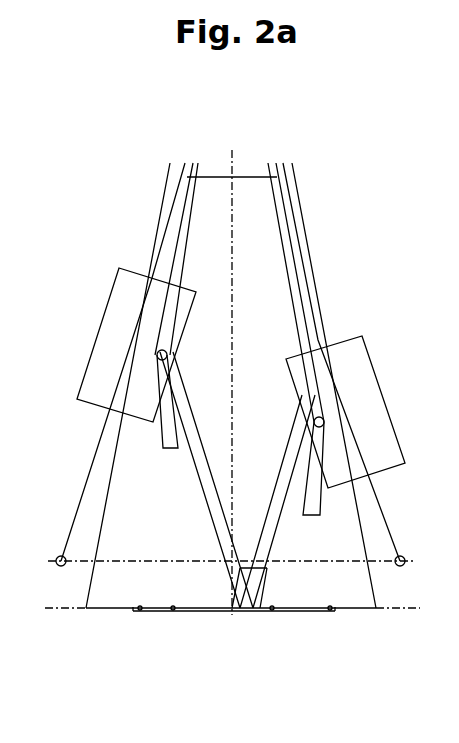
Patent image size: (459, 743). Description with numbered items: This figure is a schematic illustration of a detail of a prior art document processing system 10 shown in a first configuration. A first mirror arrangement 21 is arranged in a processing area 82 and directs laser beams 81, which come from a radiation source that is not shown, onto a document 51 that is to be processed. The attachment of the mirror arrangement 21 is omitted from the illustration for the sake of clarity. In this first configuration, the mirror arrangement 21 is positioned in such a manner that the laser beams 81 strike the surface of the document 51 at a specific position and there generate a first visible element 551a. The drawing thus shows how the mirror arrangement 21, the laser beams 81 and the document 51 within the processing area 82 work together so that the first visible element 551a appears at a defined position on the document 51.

The document processing system 10 is at (130, 160).
The first mirror arrangement 21 is at (151, 264).
The laser beams 81 is at (217, 491).
The processing area 82 is at (86, 581).
The document 51 is at (172, 612).
The first visible element 551a is at (270, 613).